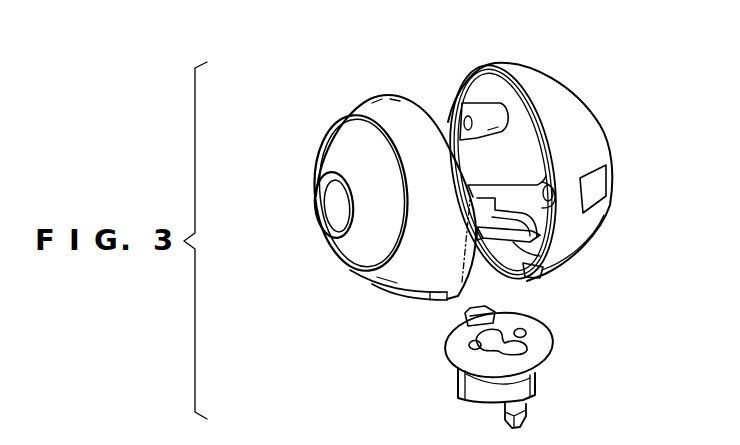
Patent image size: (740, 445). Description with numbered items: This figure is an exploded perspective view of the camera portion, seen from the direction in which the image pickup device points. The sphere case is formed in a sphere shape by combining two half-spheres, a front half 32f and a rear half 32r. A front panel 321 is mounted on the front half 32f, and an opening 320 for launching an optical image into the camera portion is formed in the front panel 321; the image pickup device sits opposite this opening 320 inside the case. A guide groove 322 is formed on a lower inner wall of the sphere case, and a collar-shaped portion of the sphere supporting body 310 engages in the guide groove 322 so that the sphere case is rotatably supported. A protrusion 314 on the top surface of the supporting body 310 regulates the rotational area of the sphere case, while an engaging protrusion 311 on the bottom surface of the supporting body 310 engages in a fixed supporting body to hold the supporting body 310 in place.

The front half 32f is at (392, 104).
The rear half 32r is at (547, 93).
The front panel 321 is at (352, 152).
The opening 320 is at (337, 210).
The guide groove 322 is at (530, 254).
The protrusion 314 is at (492, 308).
The sphere supporting body 310 is at (537, 350).
The engaging protrusion 311 is at (530, 407).